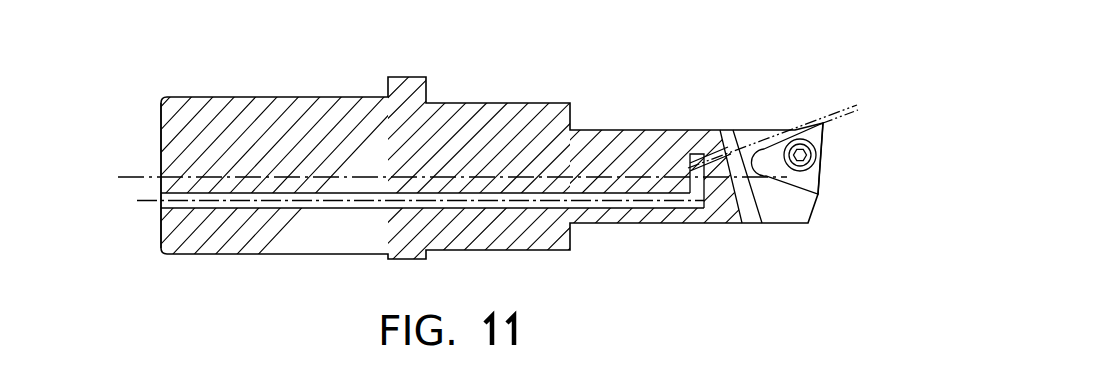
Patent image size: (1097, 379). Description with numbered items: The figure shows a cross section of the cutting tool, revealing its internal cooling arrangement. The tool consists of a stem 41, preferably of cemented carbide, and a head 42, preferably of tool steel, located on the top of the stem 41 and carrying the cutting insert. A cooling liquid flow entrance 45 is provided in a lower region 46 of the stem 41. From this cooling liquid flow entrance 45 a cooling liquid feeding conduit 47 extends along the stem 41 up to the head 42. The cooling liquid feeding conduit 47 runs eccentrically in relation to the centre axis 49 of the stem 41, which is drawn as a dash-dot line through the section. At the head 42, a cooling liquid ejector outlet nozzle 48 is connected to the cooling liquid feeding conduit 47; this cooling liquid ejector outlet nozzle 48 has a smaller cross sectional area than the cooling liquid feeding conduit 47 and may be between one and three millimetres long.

The stem 41 is at (352, 97).
The head 42 is at (660, 223).
The cooling liquid flow entrance 45 is at (159, 209).
The lower region 46 is at (160, 118).
The cooling liquid feeding conduit 47 is at (280, 176).
The cooling liquid ejector outlet nozzle 48 is at (707, 157).
The centre axis 49 is at (158, 200).